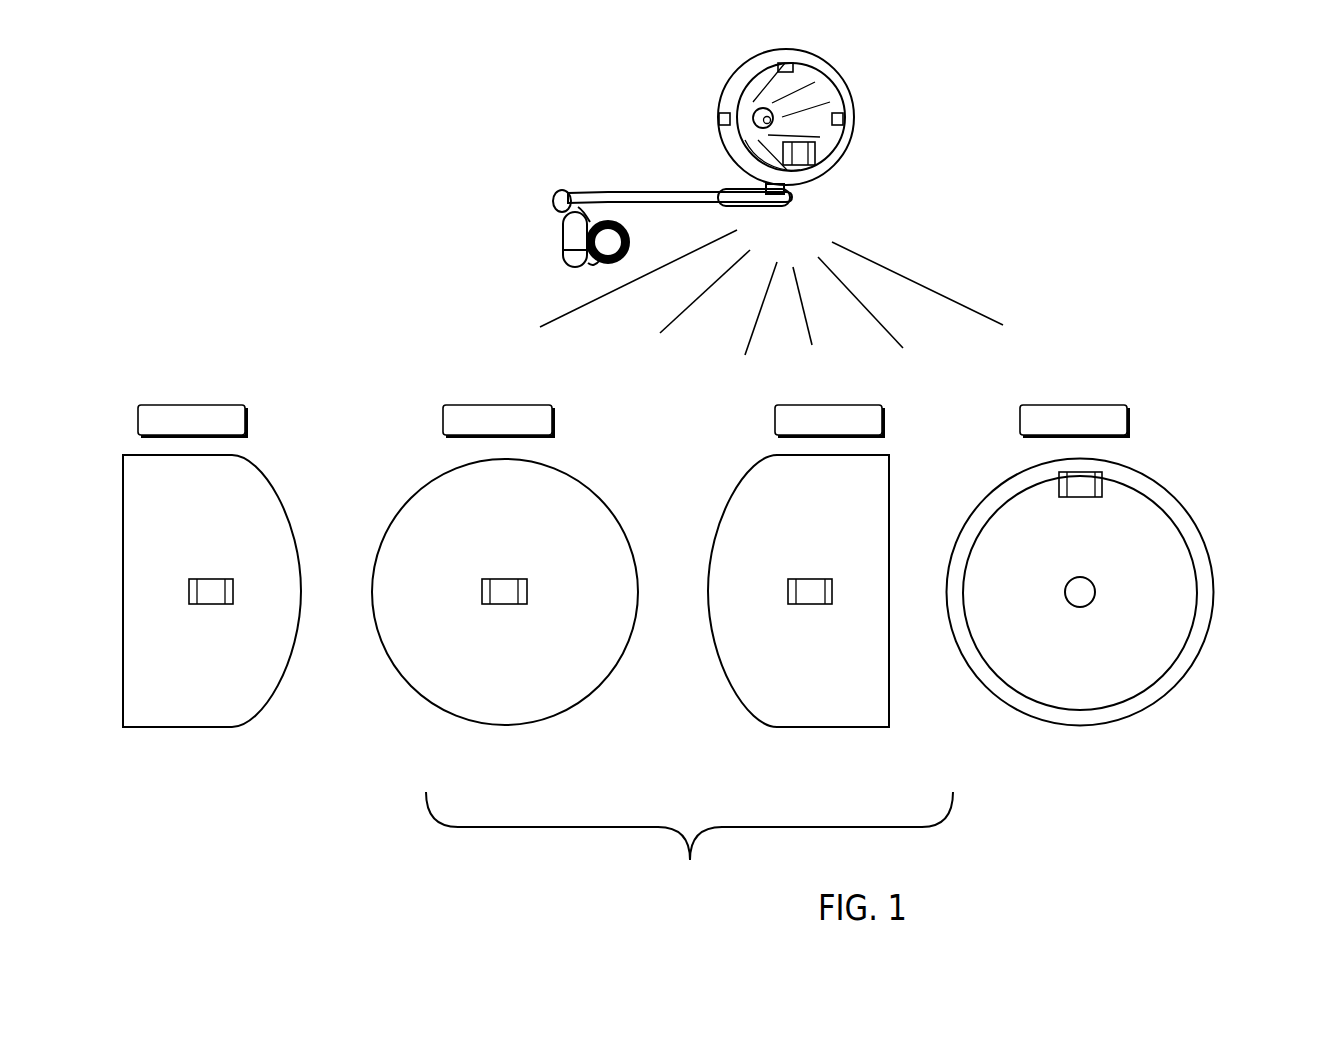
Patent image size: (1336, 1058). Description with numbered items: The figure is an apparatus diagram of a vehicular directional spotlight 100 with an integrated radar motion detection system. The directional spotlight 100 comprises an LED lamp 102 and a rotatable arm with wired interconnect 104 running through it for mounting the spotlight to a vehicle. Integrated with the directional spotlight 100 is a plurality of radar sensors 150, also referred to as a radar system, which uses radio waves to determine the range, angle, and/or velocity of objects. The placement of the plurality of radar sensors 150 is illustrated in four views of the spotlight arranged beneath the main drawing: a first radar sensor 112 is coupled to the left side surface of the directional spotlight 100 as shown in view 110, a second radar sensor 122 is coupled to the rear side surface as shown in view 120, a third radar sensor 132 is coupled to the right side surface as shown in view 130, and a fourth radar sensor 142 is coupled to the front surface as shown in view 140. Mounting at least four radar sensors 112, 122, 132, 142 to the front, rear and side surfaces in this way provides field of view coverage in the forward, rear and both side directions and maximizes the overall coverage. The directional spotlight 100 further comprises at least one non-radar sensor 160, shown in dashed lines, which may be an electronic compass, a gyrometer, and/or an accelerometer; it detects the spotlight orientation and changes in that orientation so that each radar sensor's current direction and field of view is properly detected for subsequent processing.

The directional spotlight 100 is at (912, 154).
The LED lamp 102 is at (753, 123).
The rotatable arm with wired interconnect 104 is at (633, 237).
The view 110 is at (211, 395).
The first radar sensor 112 is at (845, 116).
The view 120 is at (516, 395).
The second radar sensor 122 is at (724, 84).
The view 130 is at (849, 395).
The third radar sensor 132 is at (718, 119).
The view 140 is at (1094, 395).
The fourth radar sensor 142 is at (777, 62).
The plurality of radar sensors 150 is at (689, 843).
The non-radar sensor 160 is at (803, 160).